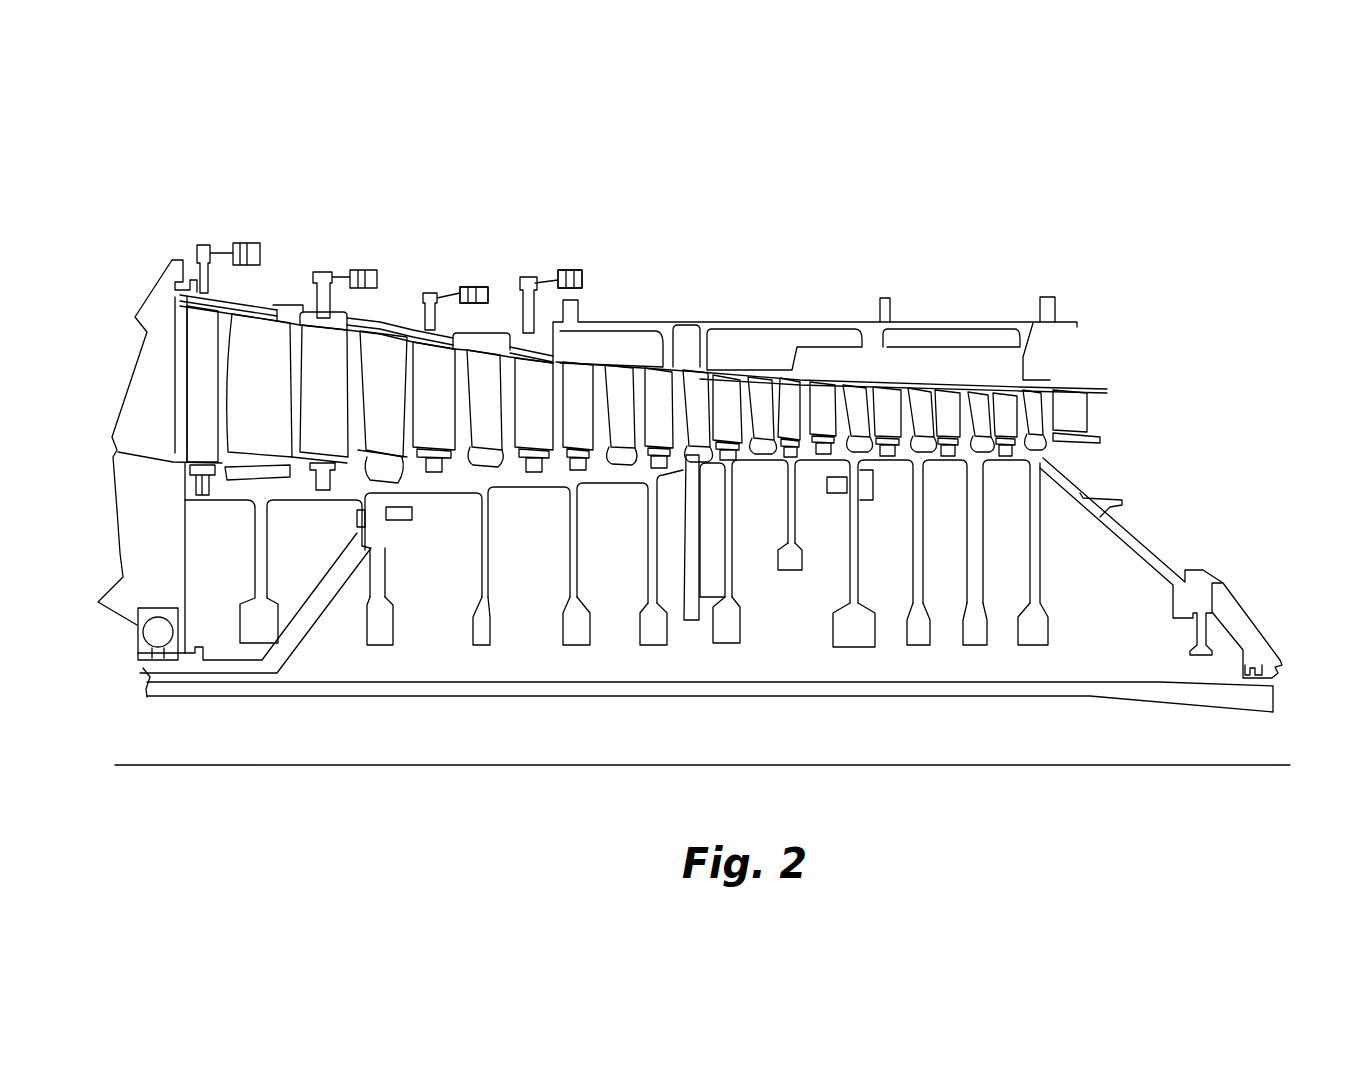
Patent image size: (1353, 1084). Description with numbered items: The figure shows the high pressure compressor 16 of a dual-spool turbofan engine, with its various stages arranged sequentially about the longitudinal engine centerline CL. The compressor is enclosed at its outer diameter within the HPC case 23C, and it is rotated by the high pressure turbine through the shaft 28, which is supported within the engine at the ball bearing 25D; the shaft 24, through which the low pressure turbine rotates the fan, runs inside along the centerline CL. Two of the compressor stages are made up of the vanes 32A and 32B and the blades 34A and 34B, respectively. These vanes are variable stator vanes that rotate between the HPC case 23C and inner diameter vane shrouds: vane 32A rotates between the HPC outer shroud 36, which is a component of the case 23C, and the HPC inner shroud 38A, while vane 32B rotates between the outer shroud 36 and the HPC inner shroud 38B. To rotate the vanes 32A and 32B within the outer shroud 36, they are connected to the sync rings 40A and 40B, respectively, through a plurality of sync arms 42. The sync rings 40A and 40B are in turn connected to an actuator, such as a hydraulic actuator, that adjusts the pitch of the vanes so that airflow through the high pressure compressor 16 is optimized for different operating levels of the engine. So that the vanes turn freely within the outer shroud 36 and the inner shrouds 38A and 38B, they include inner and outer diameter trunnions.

The high pressure compressor 16 is at (438, 230).
The HPC case 23C is at (683, 311).
The shaft 24 is at (575, 687).
The ball bearing 25D is at (133, 650).
The shaft 28 is at (157, 668).
The vane 32A is at (449, 406).
The vane 32B is at (551, 406).
The blade 34A is at (383, 358).
The blade 34B is at (490, 350).
The HPC outer shroud 36 is at (385, 360).
The HPC inner shroud 38A is at (480, 473).
The HPC inner shroud 38B is at (557, 470).
The sync ring 40A is at (478, 293).
The sync ring 40B is at (582, 279).
The sync arm 42 is at (443, 290).
The longitudinal engine centerline CL is at (1215, 765).